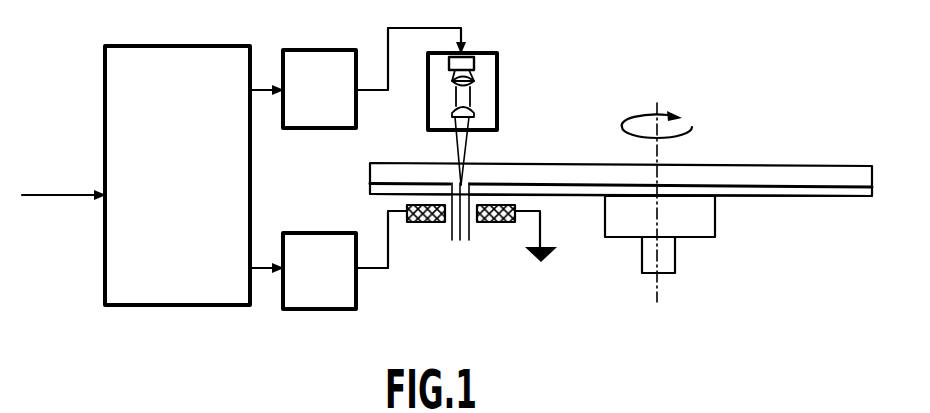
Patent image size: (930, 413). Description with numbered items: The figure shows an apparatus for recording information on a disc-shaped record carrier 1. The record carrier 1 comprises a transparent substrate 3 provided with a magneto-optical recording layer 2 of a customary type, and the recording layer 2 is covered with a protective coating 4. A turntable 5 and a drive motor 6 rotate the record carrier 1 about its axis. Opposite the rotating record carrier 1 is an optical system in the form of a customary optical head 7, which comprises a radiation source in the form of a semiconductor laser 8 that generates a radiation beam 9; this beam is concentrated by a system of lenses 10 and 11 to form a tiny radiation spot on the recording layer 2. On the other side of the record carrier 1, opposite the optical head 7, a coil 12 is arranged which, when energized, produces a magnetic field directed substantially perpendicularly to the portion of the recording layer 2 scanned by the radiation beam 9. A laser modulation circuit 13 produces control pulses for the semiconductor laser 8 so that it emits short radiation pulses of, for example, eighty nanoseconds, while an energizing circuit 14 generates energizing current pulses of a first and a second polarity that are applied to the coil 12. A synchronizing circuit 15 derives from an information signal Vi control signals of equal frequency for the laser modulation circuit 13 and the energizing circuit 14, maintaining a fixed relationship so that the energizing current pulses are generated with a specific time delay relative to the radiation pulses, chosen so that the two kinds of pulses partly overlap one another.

The record carrier 1 is at (621, 177).
The magneto-optical recording layer 2 is at (823, 190).
The transparent substrate 3 is at (821, 167).
The protective coating 4 is at (747, 194).
The turntable 5 is at (700, 238).
The drive motor 6 is at (642, 262).
The optical head 7 is at (497, 93).
The semiconductor laser 8 is at (465, 62).
The radiation beam 9 is at (466, 148).
The lens 10 is at (455, 91).
The lens 11 is at (455, 114).
The coil 12 is at (492, 223).
The laser modulation circuit 13 is at (325, 117).
The energizing circuit 14 is at (322, 297).
The synchronizing circuit 15 is at (151, 291).
The information signal Vi is at (64, 182).